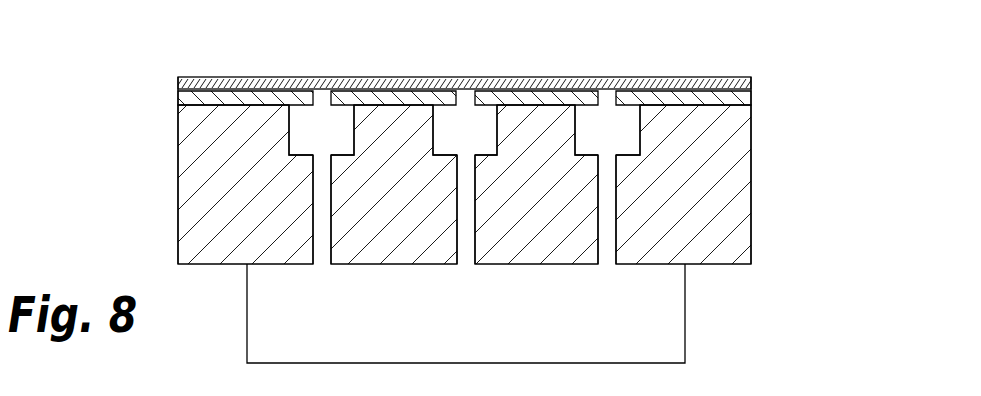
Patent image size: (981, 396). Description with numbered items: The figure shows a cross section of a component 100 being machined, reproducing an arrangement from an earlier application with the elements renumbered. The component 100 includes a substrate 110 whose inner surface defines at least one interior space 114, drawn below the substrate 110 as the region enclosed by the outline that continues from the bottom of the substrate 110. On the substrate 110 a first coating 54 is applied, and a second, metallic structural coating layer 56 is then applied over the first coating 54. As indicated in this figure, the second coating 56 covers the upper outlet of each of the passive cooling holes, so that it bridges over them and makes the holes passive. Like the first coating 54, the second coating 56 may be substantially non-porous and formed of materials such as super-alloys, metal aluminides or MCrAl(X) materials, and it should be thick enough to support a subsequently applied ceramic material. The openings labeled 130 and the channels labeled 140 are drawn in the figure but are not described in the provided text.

The component 100 is at (158, 102).
The second metallic structural coating layer 56 is at (278, 85).
The first coating 54 is at (742, 100).
The substrate 110 is at (727, 215).
The cavities 130 is at (327, 121).
The slots 140 is at (322, 265).
The interior space 114 is at (250, 332).